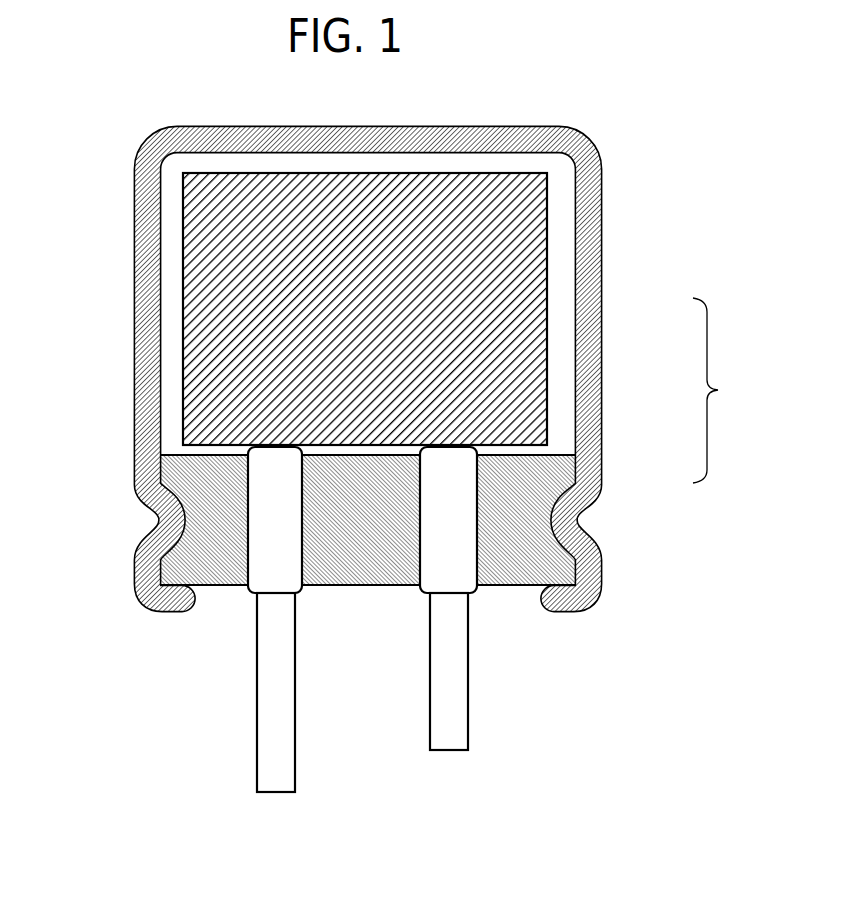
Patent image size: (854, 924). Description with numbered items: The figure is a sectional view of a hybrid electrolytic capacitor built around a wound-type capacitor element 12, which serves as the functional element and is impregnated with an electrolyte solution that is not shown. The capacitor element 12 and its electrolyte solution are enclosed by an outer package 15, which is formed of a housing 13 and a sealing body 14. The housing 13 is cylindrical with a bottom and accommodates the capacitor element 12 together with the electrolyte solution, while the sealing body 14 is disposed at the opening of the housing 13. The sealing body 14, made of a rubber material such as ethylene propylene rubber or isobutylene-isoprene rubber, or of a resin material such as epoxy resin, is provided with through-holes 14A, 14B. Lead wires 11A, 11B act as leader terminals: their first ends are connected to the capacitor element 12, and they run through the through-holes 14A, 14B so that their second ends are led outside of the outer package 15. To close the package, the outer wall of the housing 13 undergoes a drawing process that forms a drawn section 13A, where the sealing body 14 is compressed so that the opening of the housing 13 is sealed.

The lead wire 11A is at (268, 658).
The lead wire 11B is at (448, 658).
The capacitor element 12 is at (212, 335).
The housing 13 is at (600, 318).
The drawn section 13A is at (578, 515).
The sealing body 14 is at (543, 480).
The through-hole 14A is at (245, 567).
The through-hole 14B is at (480, 563).
The outer package 15 is at (720, 390).